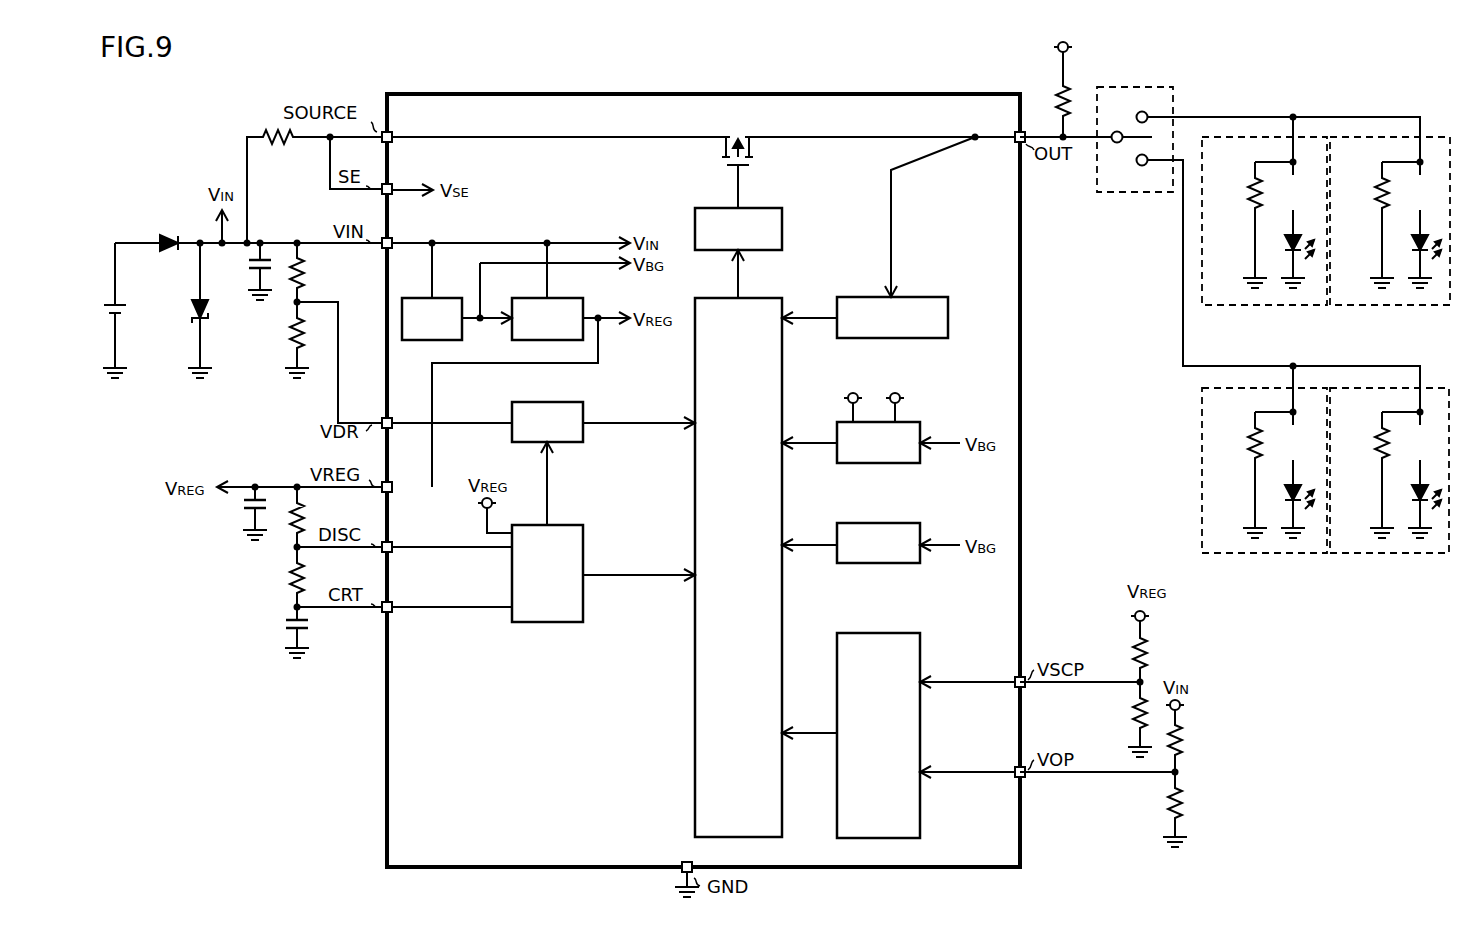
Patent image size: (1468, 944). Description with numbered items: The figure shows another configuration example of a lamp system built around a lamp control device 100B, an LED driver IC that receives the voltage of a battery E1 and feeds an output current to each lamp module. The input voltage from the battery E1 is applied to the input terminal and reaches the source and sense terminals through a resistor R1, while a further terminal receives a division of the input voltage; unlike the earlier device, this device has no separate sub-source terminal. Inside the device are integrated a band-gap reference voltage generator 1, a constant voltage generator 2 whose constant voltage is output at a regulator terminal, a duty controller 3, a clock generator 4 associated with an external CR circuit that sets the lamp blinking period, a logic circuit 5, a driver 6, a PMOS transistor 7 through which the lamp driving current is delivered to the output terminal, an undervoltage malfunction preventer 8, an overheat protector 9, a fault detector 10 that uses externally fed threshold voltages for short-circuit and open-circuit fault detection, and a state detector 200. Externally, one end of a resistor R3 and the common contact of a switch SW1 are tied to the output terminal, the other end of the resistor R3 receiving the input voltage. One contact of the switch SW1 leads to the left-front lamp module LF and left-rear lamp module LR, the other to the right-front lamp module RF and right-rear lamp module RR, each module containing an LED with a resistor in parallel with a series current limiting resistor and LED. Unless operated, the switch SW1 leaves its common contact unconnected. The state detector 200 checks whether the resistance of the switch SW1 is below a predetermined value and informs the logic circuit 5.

The lamp control device 100B is at (830, 94).
The band-gap reference voltage generator 1 is at (451, 298).
The constant voltage generator 2 is at (571, 298).
The duty controller 3 is at (546, 402).
The clock generator 4 is at (569, 524).
The logic circuit 5 is at (768, 294).
The driver 6 is at (768, 206).
The PMOS transistor 7 is at (740, 132).
The undervoltage malfunction preventer 8 is at (920, 424).
The overheat protector 9 is at (920, 526).
The fault detector 10 is at (923, 737).
The state detector 200 is at (948, 306).
The battery E1 is at (130, 301).
The resistor R1 is at (278, 148).
The resistor R3 is at (1054, 95).
The switch SW1 is at (1133, 87).
The left-front lamp module LF is at (1264, 243).
The left-rear lamp module LR is at (1390, 243).
The right-front lamp module RF is at (1244, 447).
The right-rear lamp module RR is at (1371, 447).